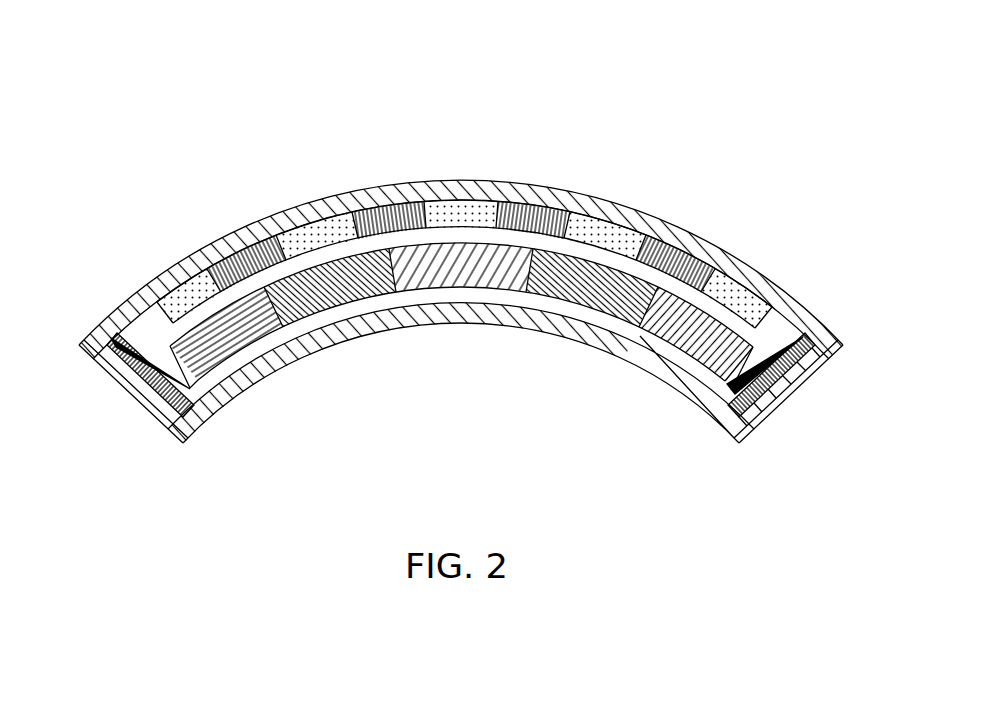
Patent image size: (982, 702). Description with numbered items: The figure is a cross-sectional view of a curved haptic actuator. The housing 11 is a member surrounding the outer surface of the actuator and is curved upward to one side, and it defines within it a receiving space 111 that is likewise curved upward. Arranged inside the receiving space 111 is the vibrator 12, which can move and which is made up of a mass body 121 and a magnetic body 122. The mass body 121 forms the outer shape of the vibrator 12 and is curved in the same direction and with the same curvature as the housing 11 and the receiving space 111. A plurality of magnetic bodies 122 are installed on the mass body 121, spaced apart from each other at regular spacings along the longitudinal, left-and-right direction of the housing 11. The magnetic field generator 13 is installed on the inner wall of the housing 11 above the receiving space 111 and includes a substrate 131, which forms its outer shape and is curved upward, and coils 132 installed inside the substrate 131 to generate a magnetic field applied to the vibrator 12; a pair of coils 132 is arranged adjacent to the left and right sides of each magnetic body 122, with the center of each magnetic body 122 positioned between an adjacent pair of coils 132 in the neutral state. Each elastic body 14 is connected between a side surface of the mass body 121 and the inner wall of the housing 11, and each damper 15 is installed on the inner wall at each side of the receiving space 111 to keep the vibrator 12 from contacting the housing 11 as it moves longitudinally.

The housing 11 is at (461, 302).
The receiving space 111 is at (660, 338).
The vibrator 12 is at (461, 350).
The mass body 121 is at (258, 320).
The magnetic body 122 is at (542, 290).
The magnetic field generator 13 is at (464, 186).
The substrate 131 is at (333, 213).
The coil 132 is at (503, 198).
The elastic body 14 is at (733, 390).
The damper 15 is at (190, 430).